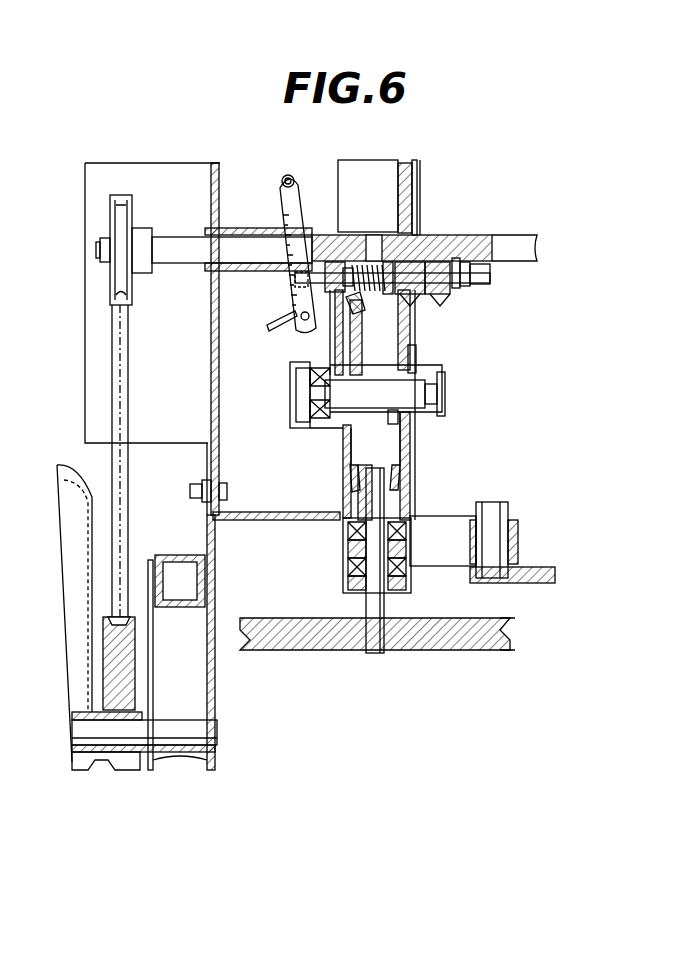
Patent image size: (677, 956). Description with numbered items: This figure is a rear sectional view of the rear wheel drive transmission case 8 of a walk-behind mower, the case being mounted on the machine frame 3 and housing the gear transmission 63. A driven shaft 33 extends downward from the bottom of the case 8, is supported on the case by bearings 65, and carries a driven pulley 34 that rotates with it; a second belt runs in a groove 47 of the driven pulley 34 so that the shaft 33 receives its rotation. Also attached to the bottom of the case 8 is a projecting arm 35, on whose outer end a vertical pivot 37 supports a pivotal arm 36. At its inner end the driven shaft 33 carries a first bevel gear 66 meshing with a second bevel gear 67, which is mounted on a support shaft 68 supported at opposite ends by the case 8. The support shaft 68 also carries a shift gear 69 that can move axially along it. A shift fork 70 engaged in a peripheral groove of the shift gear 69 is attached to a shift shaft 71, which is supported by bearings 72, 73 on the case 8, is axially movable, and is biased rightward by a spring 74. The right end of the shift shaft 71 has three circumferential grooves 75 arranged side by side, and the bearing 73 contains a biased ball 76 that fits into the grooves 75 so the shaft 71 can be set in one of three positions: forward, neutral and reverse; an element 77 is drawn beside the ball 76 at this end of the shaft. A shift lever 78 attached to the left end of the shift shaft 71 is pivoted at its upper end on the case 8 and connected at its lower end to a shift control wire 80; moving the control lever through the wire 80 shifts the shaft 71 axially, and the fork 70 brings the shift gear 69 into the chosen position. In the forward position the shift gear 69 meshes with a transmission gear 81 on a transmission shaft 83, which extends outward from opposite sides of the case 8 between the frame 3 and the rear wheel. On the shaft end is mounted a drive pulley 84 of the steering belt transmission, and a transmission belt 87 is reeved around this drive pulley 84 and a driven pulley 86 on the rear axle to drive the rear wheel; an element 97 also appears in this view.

The machine frame 3 is at (175, 560).
The rear wheel drive transmission case 8 is at (362, 166).
The driven shaft 33 is at (375, 640).
The driven pulley 34 is at (306, 650).
The projecting arm 35 is at (450, 520).
The pivotal arm 36 is at (540, 567).
The vertical pivot 37 is at (504, 516).
The groove 47 is at (505, 626).
The gear transmission 63 is at (403, 164).
The bearings 65 is at (342, 570).
The first bevel gear 66 is at (408, 484).
The second bevel gear 67 is at (357, 302).
The support shaft 68 is at (374, 410).
The shift gear 69 is at (412, 364).
The shift fork 70 is at (380, 352).
The shift shaft 71 is at (405, 228).
The bearing 72 is at (332, 300).
The bearing 73 is at (460, 295).
The spring 74 is at (353, 262).
The circumferential grooves 75 is at (435, 297).
The ball 76 is at (455, 260).
The washer 77 is at (444, 258).
The shift lever 78 is at (297, 195).
The shift control wire 80 is at (280, 315).
The transmission gear 81 is at (416, 182).
The transmission shaft 83 is at (176, 255).
The drive pulley 84 is at (125, 220).
The driven pulley 86 is at (140, 668).
The transmission belt 87 is at (132, 425).
The bar 97 is at (218, 740).